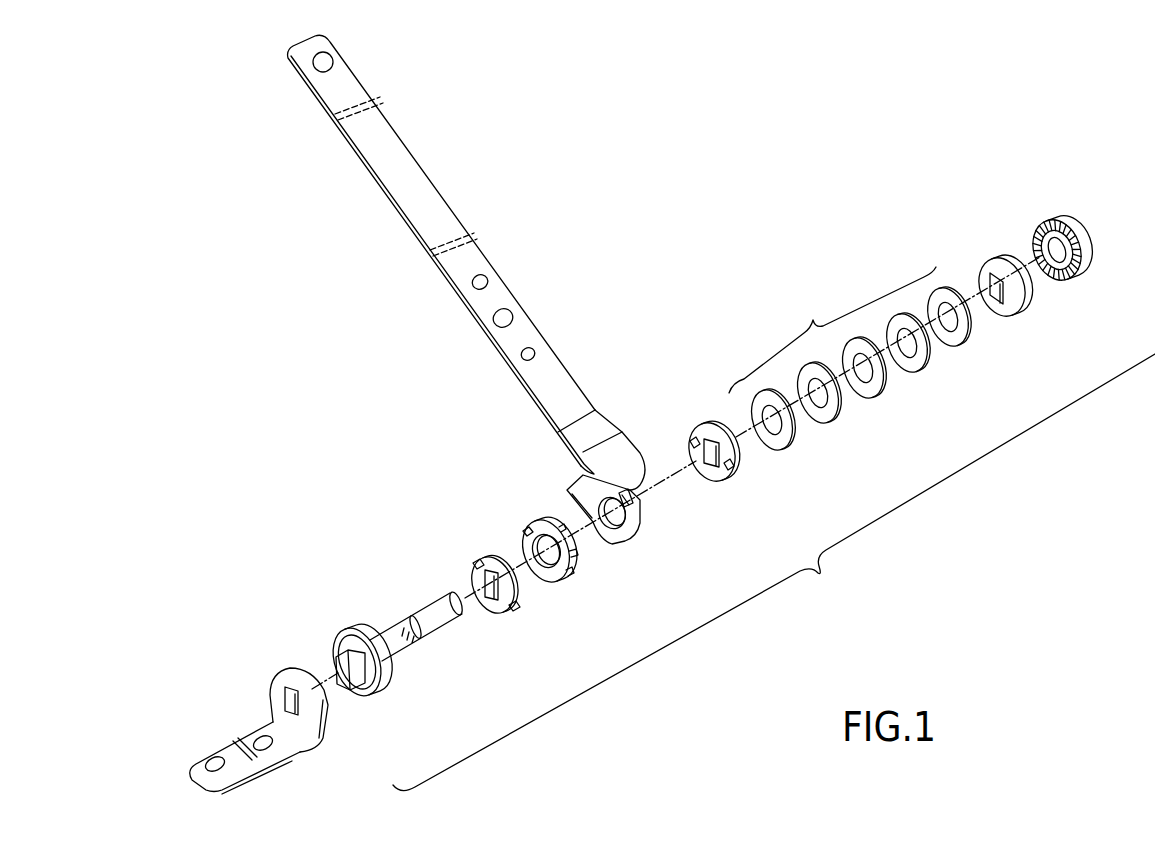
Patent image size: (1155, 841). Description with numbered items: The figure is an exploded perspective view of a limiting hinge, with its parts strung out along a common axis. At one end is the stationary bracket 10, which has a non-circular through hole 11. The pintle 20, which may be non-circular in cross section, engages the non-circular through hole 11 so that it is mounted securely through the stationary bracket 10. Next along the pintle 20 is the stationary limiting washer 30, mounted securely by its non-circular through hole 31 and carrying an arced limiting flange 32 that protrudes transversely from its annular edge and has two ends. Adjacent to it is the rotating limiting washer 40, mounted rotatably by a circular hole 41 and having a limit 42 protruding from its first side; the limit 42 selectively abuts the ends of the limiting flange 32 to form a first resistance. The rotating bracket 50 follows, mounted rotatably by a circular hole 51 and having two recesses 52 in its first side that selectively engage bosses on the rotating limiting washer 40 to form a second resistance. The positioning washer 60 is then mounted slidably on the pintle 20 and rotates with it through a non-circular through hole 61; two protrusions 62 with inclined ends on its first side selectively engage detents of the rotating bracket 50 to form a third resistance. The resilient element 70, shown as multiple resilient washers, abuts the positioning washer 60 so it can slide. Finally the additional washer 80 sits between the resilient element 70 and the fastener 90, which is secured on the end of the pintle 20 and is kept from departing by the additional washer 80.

The stationary bracket 10 is at (244, 746).
The non-circular through hole 11 is at (300, 706).
The pintle 20 is at (384, 688).
The stationary limiting washer 30 is at (510, 610).
The non-circular through hole 31 is at (489, 607).
The limiting flange 32 is at (474, 562).
The rotating limiting washer 40 is at (574, 567).
The circular hole 41 is at (548, 556).
The limit 42 is at (525, 530).
The rotating bracket 50 is at (573, 488).
The circular hole 51 is at (628, 535).
The recesses 52 is at (638, 502).
The positioning washer 60 is at (718, 478).
The non-circular through hole 61 is at (708, 436).
The protrusions 62 is at (690, 441).
The resilient element 70 is at (853, 361).
The additional washer 80 is at (989, 259).
The fastener 90 is at (1084, 237).